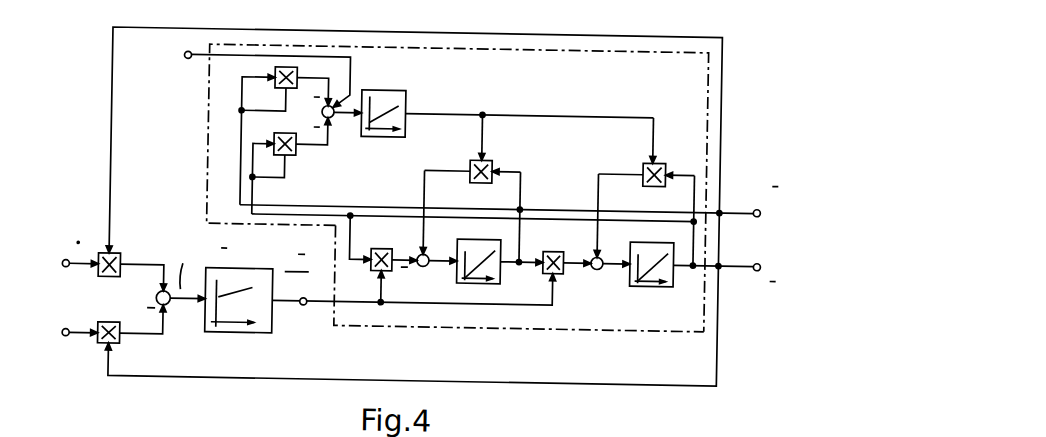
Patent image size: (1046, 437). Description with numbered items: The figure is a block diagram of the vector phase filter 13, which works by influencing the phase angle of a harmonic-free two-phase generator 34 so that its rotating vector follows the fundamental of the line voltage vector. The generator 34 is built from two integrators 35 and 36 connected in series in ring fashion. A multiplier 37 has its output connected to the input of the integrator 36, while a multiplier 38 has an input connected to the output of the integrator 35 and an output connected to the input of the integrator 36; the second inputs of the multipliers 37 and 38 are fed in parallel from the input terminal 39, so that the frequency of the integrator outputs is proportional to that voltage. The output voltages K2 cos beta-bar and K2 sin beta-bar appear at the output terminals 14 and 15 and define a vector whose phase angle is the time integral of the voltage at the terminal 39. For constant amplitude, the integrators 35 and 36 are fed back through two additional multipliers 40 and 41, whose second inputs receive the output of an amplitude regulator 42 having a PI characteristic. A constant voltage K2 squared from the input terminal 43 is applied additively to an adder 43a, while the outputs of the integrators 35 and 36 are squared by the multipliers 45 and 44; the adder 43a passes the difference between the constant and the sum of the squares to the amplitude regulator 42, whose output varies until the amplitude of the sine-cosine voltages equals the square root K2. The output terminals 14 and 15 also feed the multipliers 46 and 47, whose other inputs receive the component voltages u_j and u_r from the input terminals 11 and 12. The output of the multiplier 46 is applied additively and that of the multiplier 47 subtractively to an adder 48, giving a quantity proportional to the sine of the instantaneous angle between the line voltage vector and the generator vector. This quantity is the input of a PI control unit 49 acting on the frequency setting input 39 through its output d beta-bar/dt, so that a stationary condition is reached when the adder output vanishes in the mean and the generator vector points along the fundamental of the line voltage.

The input terminal 11 is at (64, 263).
The input terminal 12 is at (63, 319).
The vector phase filter 13 is at (178, 132).
The output terminal 14 is at (769, 206).
The output terminal 15 is at (772, 243).
The two-phase generator 34 is at (465, 313).
The integrator 35 is at (462, 278).
The integrator 36 is at (668, 316).
The multiplier 37 is at (394, 232).
The multiplier 38 is at (564, 242).
The input terminal 39 is at (316, 302).
The multiplier 40 is at (471, 177).
The multiplier 41 is at (620, 134).
The amplitude regulator 42 is at (403, 93).
The input terminal 43 is at (182, 55).
The adder 43a is at (334, 116).
The multiplier 44 is at (311, 26).
The multiplier 45 is at (310, 26).
The multiplier 46 is at (124, 255).
The multiplier 47 is at (126, 342).
The adder 48 is at (173, 304).
The PI control unit 49 is at (278, 332).